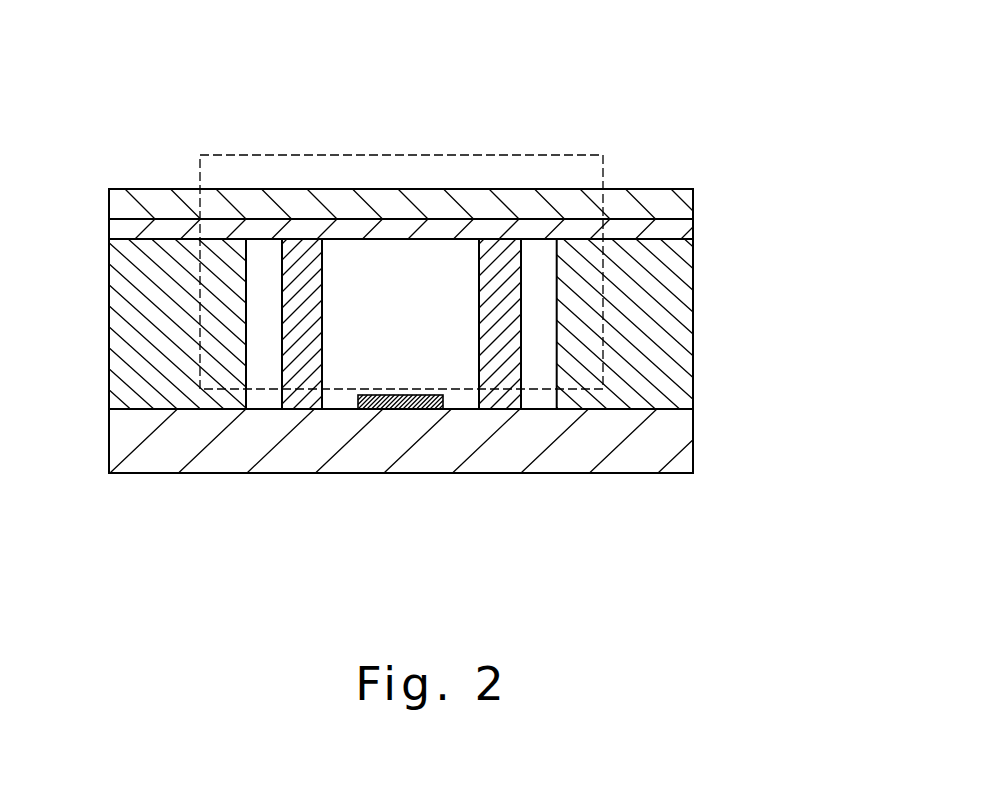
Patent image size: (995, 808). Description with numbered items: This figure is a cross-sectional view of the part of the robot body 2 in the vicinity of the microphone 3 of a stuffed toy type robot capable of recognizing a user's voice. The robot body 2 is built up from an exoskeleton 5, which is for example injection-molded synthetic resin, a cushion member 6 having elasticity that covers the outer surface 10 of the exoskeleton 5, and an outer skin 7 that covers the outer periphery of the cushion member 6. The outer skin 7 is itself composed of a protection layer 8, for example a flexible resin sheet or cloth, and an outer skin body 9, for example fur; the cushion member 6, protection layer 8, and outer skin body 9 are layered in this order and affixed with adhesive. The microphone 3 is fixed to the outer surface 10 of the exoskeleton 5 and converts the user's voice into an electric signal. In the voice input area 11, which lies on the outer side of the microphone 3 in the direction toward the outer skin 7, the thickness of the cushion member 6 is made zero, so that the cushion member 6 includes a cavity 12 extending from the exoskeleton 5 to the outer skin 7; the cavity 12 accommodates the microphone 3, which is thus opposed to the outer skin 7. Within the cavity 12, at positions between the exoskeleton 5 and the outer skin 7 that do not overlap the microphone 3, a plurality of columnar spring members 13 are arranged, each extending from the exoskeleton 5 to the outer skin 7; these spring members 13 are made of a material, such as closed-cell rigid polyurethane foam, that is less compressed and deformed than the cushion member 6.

The robot body 2 is at (725, 90).
The microphone 3 is at (395, 412).
The exoskeleton 5 is at (675, 443).
The cushion member 6 is at (673, 332).
The outer skin 7 is at (459, 211).
The protection layer 8 is at (687, 228).
The outer skin body 9 is at (677, 204).
The outer surface 10 is at (118, 408).
The voice input area 11 is at (410, 153).
The cavity 12 is at (247, 268).
The spring members 13 is at (307, 402).